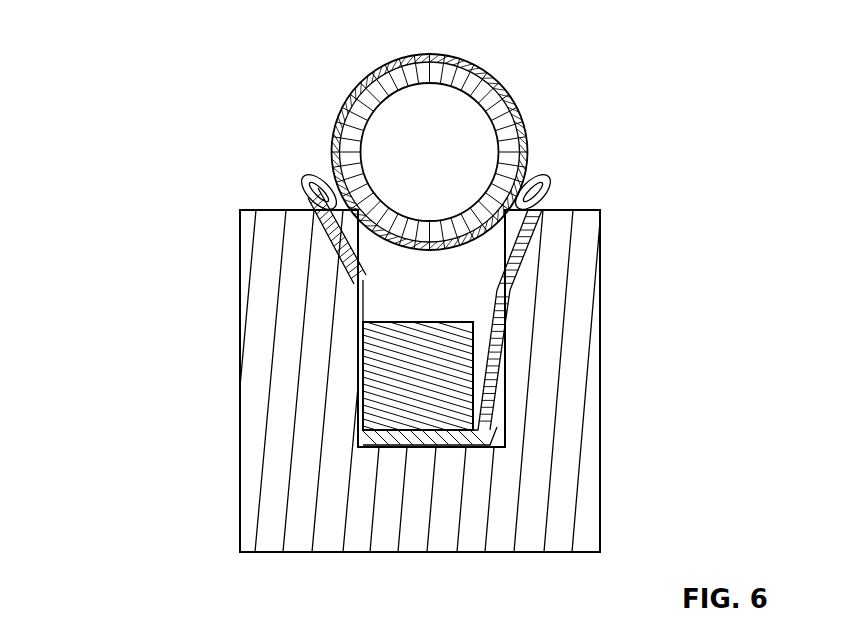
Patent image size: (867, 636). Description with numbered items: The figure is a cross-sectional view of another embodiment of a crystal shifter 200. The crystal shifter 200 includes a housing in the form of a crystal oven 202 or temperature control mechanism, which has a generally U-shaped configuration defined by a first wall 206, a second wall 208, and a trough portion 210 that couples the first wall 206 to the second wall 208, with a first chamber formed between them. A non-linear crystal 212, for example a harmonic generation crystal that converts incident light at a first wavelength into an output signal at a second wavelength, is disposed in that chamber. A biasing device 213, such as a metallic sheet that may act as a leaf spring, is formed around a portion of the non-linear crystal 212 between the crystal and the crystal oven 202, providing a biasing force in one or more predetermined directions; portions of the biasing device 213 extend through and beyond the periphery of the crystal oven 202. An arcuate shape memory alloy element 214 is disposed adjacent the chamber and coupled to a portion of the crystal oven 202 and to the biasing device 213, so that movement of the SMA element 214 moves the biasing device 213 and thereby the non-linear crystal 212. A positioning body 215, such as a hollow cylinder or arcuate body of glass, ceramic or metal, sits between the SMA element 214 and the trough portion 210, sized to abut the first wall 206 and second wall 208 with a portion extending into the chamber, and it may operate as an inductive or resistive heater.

The crystal shifter 200 is at (215, 129).
The crystal oven 202 is at (600, 208).
The first wall 206 is at (238, 265).
The second wall 208 is at (583, 297).
The trough portion 210 is at (430, 480).
The non-linear crystal 212 is at (447, 322).
The biasing device 213 is at (483, 383).
The shape memory alloy element 214 is at (495, 95).
The positioning body 215 is at (336, 128).